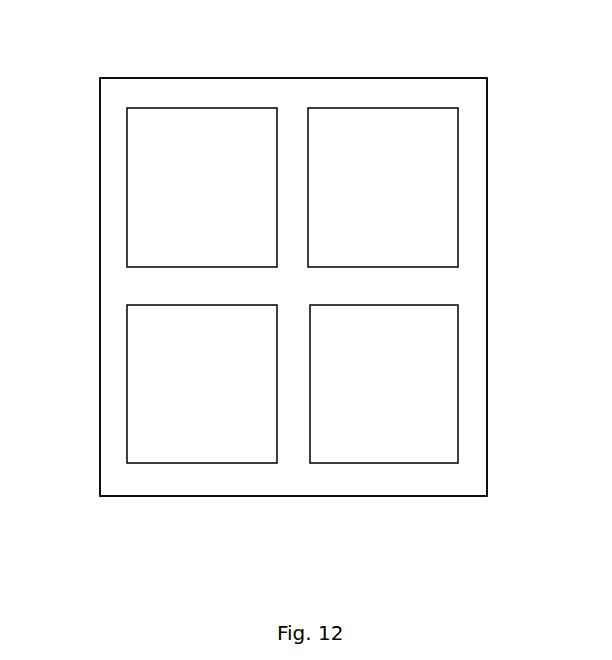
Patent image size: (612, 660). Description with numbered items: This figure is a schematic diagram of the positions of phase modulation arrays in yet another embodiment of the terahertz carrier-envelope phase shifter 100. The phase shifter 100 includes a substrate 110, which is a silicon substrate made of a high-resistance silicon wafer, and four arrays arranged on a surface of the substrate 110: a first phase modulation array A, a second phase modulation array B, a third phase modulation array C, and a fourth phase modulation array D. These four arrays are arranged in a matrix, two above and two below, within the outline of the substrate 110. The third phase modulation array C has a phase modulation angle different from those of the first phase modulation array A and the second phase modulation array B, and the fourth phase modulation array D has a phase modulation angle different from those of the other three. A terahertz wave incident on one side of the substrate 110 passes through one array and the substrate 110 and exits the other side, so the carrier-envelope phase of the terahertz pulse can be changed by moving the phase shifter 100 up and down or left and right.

The terahertz carrier-envelope phase shifter 100 is at (316, 27).
The substrate 110 is at (202, 97).
The first phase modulation array A is at (167, 187).
The second phase modulation array B is at (428, 183).
The third phase modulation array C is at (167, 392).
The fourth phase modulation array D is at (430, 393).